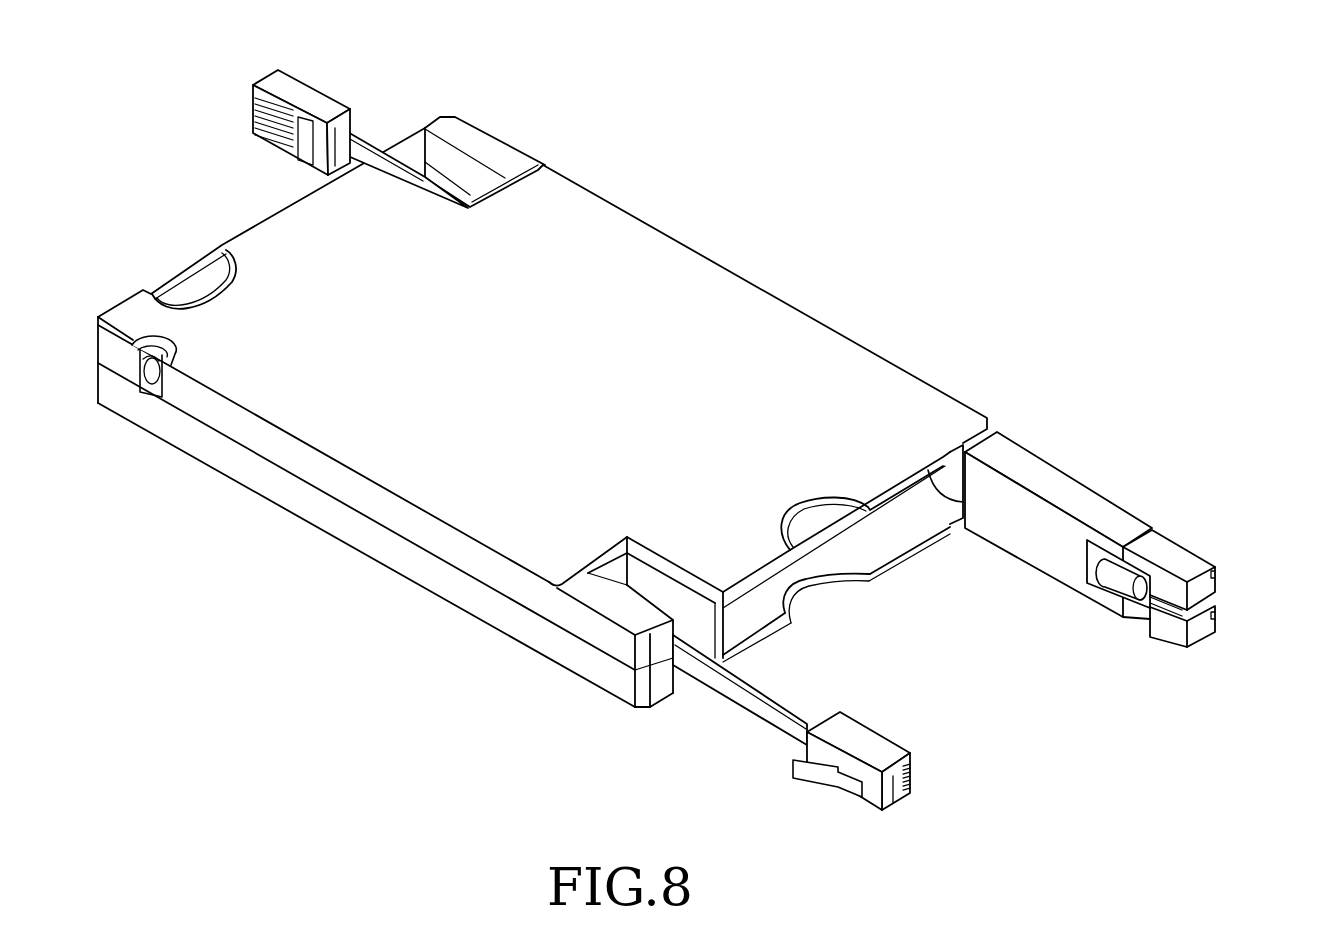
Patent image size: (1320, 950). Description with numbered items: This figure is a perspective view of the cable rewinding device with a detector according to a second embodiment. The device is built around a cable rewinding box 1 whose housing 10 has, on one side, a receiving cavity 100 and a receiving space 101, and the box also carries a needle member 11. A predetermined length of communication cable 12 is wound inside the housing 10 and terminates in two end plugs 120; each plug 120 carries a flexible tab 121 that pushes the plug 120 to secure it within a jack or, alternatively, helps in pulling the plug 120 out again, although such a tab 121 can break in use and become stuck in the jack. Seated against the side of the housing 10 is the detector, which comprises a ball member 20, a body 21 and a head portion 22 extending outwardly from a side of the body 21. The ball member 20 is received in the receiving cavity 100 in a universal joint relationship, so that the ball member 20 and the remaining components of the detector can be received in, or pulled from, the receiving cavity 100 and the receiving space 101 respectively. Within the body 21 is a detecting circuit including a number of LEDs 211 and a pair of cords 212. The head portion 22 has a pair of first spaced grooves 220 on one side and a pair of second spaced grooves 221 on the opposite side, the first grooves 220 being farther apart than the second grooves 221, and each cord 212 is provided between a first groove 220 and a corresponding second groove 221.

The cable rewinding box 1 is at (676, 426).
The housing 10 is at (653, 262).
The receiving cavity 100 is at (953, 480).
The receiving space 101 is at (772, 615).
The needle member 11 is at (98, 403).
The communication cable 12 is at (360, 148).
The end plug 120 is at (300, 92).
The flexible tab 121 is at (812, 773).
The ball member 20 is at (952, 512).
The body 21 is at (1042, 472).
The LED 211 is at (1118, 582).
The cord 212 is at (1200, 627).
The head portion 22 is at (1175, 553).
The first spaced groove 220 is at (1215, 610).
The second spaced groove 221 is at (1178, 605).